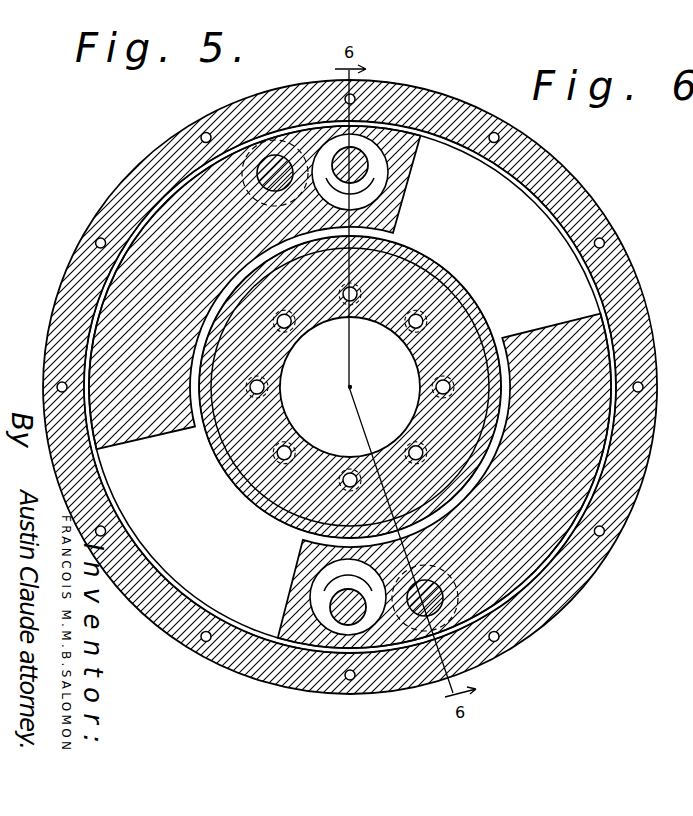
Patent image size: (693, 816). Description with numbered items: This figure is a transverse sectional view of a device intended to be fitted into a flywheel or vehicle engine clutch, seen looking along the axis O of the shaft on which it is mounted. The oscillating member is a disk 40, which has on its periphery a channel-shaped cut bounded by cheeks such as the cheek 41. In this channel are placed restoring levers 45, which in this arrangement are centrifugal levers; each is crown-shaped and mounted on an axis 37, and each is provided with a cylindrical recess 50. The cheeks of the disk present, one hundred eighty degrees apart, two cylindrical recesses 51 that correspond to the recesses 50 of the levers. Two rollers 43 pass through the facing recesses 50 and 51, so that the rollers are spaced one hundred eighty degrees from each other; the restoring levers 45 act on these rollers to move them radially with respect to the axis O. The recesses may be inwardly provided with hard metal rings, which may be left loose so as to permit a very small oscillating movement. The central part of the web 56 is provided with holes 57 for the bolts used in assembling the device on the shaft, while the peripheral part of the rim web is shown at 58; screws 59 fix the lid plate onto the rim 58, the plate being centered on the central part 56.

The axes 37 is at (243, 167).
The disk 40 is at (560, 260).
The cheek 41 is at (515, 195).
The rollers 43 is at (368, 165).
The restoring levers 45 is at (173, 197).
The cylindrical recess 50 is at (358, 188).
The cylindrical recesses 51 is at (300, 140).
The central part of the web 56 is at (400, 280).
The holes 57 is at (418, 320).
The rim 58 is at (577, 198).
The screws 59 is at (499, 136).
The axis of shaft O is at (355, 388).